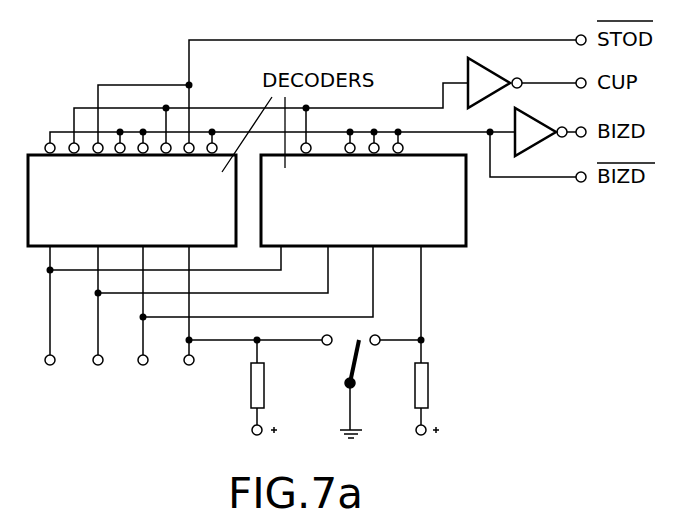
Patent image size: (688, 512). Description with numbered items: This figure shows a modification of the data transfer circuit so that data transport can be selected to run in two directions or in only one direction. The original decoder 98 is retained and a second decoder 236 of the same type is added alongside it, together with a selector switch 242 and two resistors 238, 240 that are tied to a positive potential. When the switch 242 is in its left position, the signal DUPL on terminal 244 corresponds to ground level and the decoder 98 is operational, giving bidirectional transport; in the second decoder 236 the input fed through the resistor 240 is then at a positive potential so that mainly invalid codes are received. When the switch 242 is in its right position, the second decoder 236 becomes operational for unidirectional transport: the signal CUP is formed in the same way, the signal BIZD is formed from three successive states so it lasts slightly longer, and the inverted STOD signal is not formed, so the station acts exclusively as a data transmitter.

The decoder 98 is at (202, 211).
The second decoder 236 is at (443, 215).
The resistor 238 is at (265, 397).
The resistor 240 is at (428, 386).
The selector switch 242 is at (356, 381).
The terminal 244 is at (192, 366).